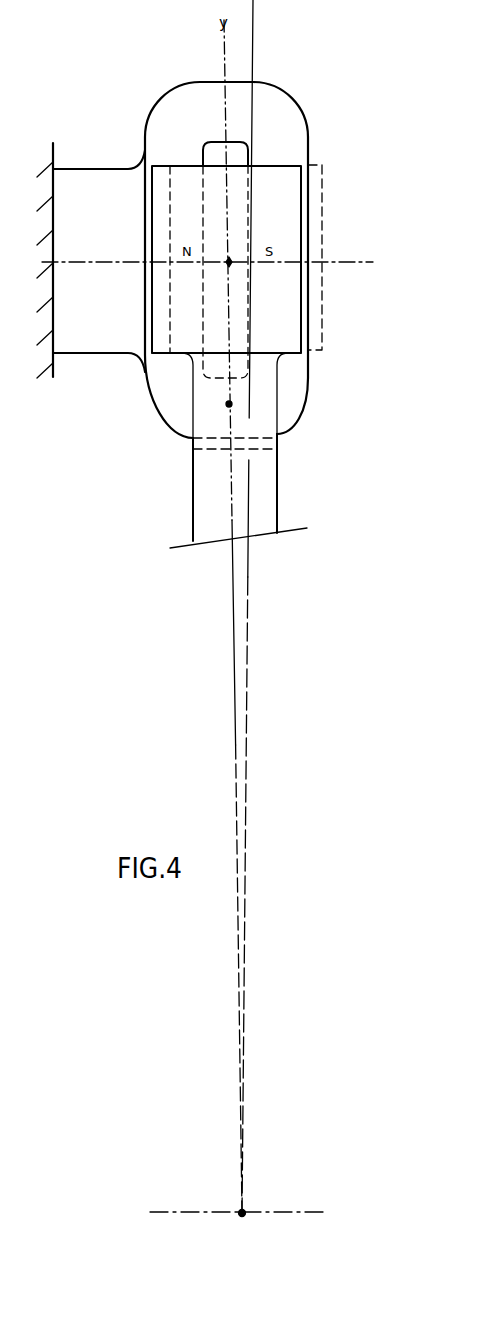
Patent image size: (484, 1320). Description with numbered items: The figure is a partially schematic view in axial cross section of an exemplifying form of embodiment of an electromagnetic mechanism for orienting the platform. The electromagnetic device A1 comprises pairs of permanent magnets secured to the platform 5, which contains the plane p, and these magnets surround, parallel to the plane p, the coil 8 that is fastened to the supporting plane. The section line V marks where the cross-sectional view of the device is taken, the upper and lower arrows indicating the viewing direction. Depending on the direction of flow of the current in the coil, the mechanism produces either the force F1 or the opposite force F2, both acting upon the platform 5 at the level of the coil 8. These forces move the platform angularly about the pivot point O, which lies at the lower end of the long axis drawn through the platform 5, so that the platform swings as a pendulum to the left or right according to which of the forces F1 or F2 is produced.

The electromagnetic device A1 is at (292, 91).
The coil 8 is at (289, 152).
The platform 5 is at (268, 500).
The plane p is at (233, 462).
The section line V- V is at (235, 55).
The force F1 is at (229, 404).
The force F2 is at (229, 404).
The pivot point O is at (240, 1211).